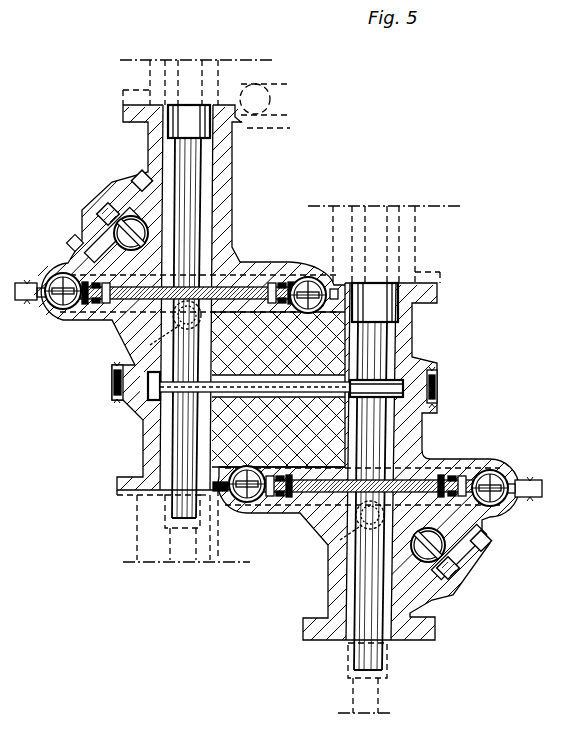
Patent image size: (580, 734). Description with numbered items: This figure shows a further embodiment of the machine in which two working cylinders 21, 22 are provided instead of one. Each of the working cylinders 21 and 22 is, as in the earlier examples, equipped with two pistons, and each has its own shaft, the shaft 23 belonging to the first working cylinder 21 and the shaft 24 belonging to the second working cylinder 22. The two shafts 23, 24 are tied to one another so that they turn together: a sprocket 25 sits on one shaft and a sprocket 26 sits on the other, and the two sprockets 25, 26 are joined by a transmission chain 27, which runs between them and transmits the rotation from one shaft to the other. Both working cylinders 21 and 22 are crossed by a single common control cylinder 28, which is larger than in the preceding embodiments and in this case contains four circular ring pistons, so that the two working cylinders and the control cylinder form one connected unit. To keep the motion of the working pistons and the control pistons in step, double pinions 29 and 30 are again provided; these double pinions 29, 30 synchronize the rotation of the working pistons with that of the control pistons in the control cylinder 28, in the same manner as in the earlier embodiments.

The working cylinder 21 is at (55, 321).
The working cylinder 22 is at (233, 512).
The shaft 23 is at (172, 507).
The shaft 24 is at (362, 652).
The sprocket 25 is at (143, 398).
The sprocket 26 is at (415, 368).
The transmission chain 27 is at (335, 380).
The control cylinder 28 is at (132, 215).
The double pinion 29 is at (160, 318).
The double pinion 30 is at (176, 335).